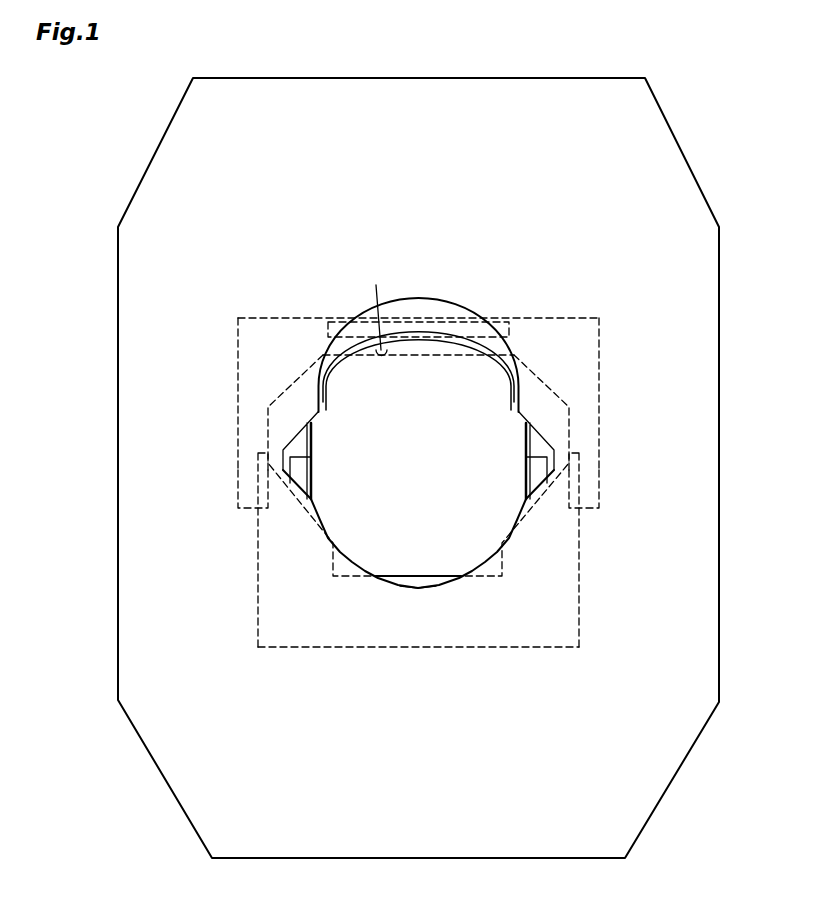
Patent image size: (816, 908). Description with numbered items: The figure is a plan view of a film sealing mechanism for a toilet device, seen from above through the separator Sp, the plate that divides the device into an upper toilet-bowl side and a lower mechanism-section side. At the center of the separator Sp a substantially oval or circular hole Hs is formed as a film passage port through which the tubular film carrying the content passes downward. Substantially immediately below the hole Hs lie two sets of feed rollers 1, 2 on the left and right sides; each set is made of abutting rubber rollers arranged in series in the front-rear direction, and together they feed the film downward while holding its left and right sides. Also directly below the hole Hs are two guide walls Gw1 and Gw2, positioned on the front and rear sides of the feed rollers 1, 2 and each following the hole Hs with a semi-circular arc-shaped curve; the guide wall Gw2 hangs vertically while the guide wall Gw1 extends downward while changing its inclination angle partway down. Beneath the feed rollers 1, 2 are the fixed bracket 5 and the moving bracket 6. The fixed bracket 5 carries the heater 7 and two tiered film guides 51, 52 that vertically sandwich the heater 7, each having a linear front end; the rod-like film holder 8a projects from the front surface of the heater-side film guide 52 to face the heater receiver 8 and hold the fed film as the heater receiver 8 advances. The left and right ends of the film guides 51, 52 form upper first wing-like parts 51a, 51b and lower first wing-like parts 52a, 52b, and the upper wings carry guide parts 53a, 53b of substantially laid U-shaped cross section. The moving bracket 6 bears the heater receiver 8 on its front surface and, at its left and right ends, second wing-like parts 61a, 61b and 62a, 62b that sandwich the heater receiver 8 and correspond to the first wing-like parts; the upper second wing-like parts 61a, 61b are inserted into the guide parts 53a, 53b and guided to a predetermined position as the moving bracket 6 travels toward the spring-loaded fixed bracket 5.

The separator Sp is at (655, 178).
The hole Hs is at (477, 423).
The fixed bracket 5 is at (421, 365).
The moving bracket 6 is at (420, 599).
The film guide 51 is at (419, 376).
The film guide 52 is at (337, 363).
The upper first wing-like part 51a is at (237, 394).
The lower first wing-like part 52a is at (252, 362).
The upper first wing-like part 51b is at (602, 394).
The lower first wing-like part 52b is at (600, 388).
The guide part 53a is at (238, 476).
The guide part 53b is at (600, 480).
The upper second wing-like part 61a is at (267, 550).
The second wing-like part 62a is at (273, 540).
The upper second wing-like part 61b is at (571, 550).
The second wing-like part 62b is at (571, 550).
The heater 7 is at (449, 338).
The heater receiver 8 is at (394, 576).
The film holder 8a is at (375, 308).
The feed roller 1 is at (317, 461).
The feed roller 2 is at (521, 460).
The guide wall Gw1 is at (398, 357).
The guide wall Gw2 is at (422, 587).